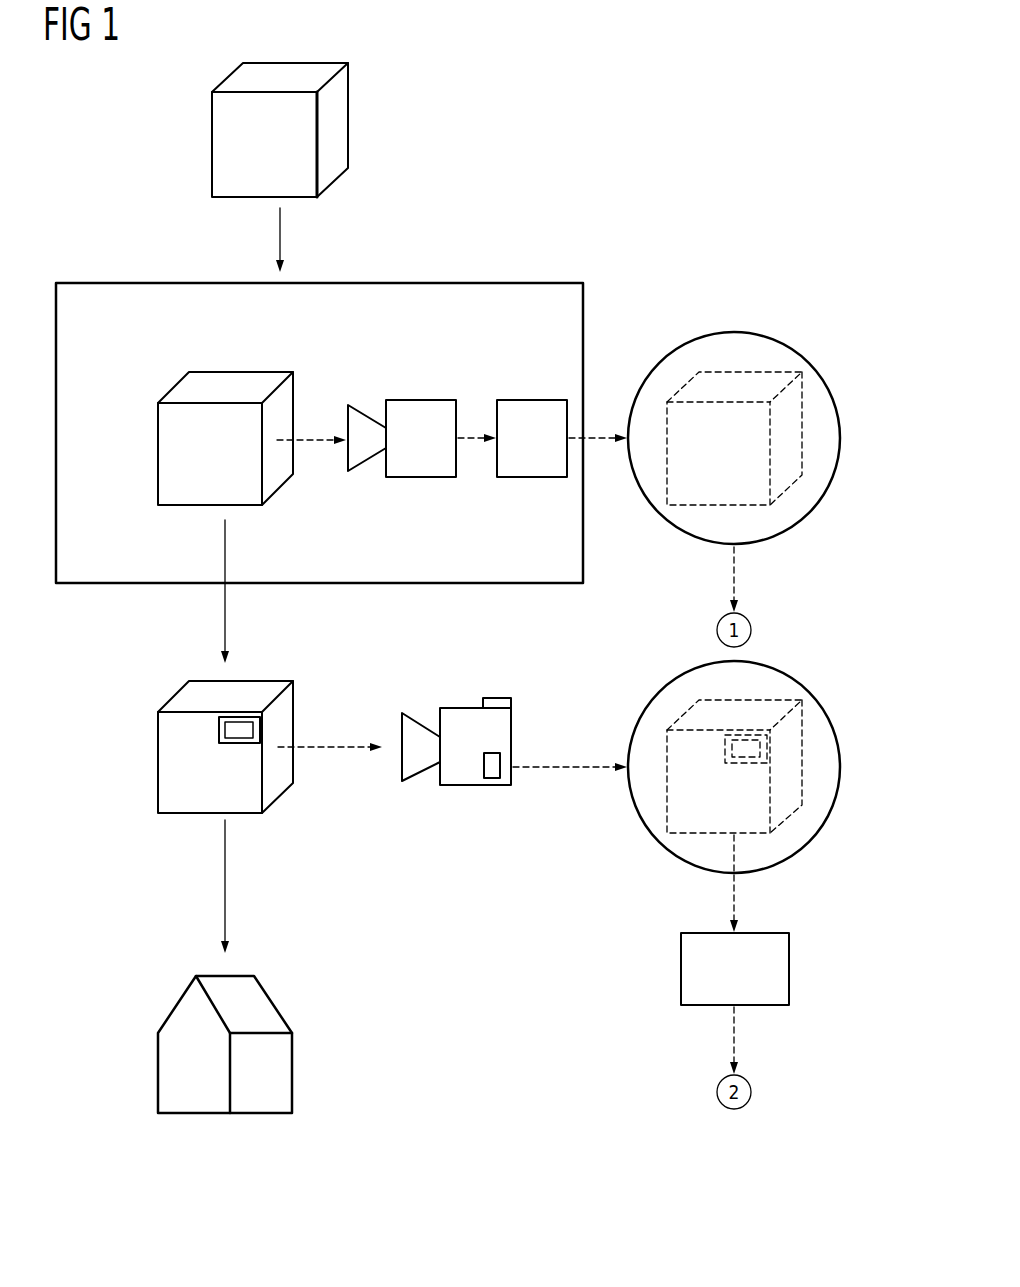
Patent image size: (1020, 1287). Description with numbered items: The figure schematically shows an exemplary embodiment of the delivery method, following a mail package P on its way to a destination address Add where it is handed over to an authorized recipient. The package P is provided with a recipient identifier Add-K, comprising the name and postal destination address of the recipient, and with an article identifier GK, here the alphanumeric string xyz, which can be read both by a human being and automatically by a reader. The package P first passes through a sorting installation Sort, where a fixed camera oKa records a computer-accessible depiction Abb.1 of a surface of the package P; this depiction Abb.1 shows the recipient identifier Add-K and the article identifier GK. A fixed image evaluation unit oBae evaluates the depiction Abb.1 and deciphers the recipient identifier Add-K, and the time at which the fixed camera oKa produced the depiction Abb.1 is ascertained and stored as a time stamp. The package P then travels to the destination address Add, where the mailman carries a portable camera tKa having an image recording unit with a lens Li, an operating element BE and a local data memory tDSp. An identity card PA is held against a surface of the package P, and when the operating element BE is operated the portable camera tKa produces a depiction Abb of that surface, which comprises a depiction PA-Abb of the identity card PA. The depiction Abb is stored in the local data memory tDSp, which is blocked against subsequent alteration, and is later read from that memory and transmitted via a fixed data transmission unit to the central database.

The mail package P is at (333, 121).
The recipient identifier Add-K is at (232, 136).
The article identifier GK is at (212, 496).
The sorting installation Sort is at (488, 282).
The fixed camera oKa is at (420, 398).
The fixed image evaluation unit oBae is at (532, 398).
The depiction Abb.1 is at (826, 380).
The depiction Abb is at (826, 706).
The depiction of the identity card PA-Abb is at (745, 747).
The identity card PA is at (243, 730).
The portable camera tKa is at (456, 706).
The operating element BE is at (497, 697).
The local data memory tDSp is at (492, 780).
The lens Li is at (423, 773).
The destination address Add is at (258, 1005).